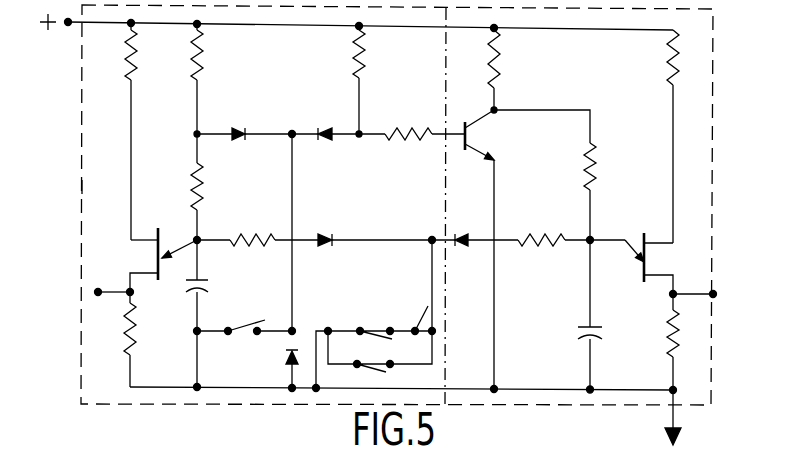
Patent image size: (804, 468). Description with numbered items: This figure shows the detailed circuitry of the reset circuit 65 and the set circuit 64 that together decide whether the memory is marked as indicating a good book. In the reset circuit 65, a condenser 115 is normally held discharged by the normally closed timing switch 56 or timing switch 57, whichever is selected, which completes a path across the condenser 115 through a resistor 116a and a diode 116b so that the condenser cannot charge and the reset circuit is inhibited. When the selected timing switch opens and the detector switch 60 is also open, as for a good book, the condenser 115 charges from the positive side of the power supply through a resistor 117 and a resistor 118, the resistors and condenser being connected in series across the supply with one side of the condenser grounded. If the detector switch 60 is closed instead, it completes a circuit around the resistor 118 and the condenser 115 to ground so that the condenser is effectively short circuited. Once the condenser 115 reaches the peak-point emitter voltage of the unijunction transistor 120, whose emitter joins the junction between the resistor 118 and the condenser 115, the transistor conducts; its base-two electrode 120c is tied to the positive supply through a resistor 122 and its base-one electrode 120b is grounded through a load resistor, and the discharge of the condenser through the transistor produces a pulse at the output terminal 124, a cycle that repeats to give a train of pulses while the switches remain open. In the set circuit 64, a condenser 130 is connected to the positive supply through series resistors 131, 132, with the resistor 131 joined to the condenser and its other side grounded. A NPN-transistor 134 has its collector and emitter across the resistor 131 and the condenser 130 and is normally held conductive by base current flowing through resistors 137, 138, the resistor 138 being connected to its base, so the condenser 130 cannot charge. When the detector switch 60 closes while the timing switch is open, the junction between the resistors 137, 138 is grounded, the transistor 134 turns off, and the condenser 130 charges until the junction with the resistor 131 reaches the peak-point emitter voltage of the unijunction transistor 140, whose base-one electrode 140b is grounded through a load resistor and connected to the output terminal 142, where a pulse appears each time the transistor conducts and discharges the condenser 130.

The timing switch 56 is at (376, 333).
The timing switch 57 is at (386, 368).
The detector switch 60 is at (248, 326).
The set circuit 64 is at (698, 143).
The reset circuit 65 is at (88, 184).
The condenser 115 is at (203, 287).
The resistor 116a is at (252, 234).
The diode 116b is at (331, 236).
The resistor 117 is at (200, 62).
The resistor 118 is at (201, 186).
The unijunction transistor 120 is at (170, 227).
The base 1 electrode 120b is at (144, 276).
The base 2 electrode 120c is at (158, 244).
The resistor 122 is at (134, 66).
The output terminal 124 is at (98, 292).
The condenser 130 is at (578, 338).
The resistor 131 is at (594, 164).
The resistor 132 is at (498, 60).
The NPN-transistor 134 is at (482, 138).
The resistor 137 is at (428, 140).
The resistor 138 is at (363, 66).
The unijunction transistor 140 is at (648, 283).
The base 1 electrode 140b is at (684, 266).
The output terminal 142 is at (713, 294).